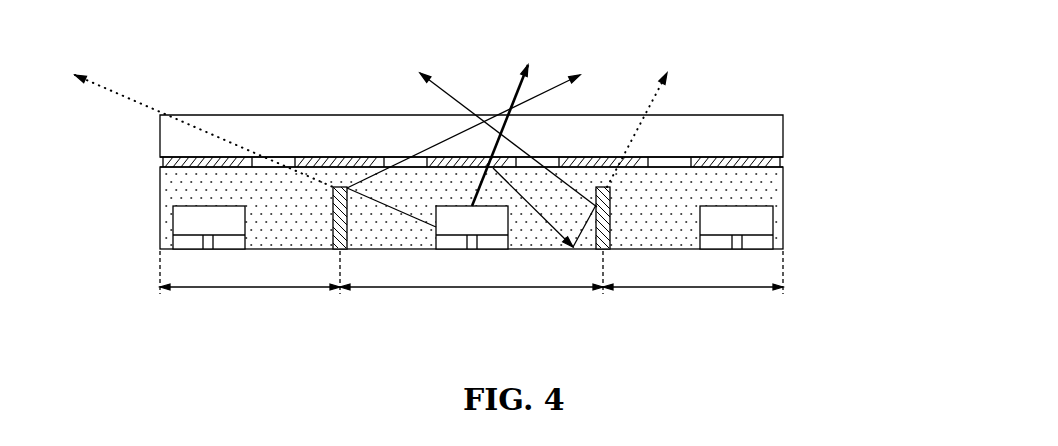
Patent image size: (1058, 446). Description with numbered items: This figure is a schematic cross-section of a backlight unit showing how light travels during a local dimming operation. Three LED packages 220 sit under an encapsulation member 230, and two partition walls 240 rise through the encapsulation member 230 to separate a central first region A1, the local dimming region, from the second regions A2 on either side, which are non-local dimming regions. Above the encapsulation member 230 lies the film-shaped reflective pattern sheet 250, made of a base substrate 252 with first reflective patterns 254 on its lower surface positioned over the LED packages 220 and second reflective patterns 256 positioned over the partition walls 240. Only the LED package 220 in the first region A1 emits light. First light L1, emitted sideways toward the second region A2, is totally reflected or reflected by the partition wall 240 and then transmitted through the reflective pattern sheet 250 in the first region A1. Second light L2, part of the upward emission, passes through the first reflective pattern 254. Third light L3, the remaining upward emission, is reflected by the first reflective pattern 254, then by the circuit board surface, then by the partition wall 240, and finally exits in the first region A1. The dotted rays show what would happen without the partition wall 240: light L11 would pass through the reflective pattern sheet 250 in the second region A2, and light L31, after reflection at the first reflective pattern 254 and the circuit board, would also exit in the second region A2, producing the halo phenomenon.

The LED package 220 is at (758, 222).
The encapsulation member 230 is at (770, 186).
The partition wall 240 is at (610, 200).
The reflective pattern sheet 250 is at (552, 125).
The base substrate 252 is at (738, 114).
The first reflective pattern 254 is at (760, 157).
The second reflective pattern 256 is at (746, 134).
The first light L1 is at (479, 143).
The second light L2 is at (500, 127).
The third light L3 is at (499, 149).
The light L11 is at (193, 115).
The light L31 is at (649, 120).
The first region A1 is at (471, 284).
The second region A2 is at (471, 284).